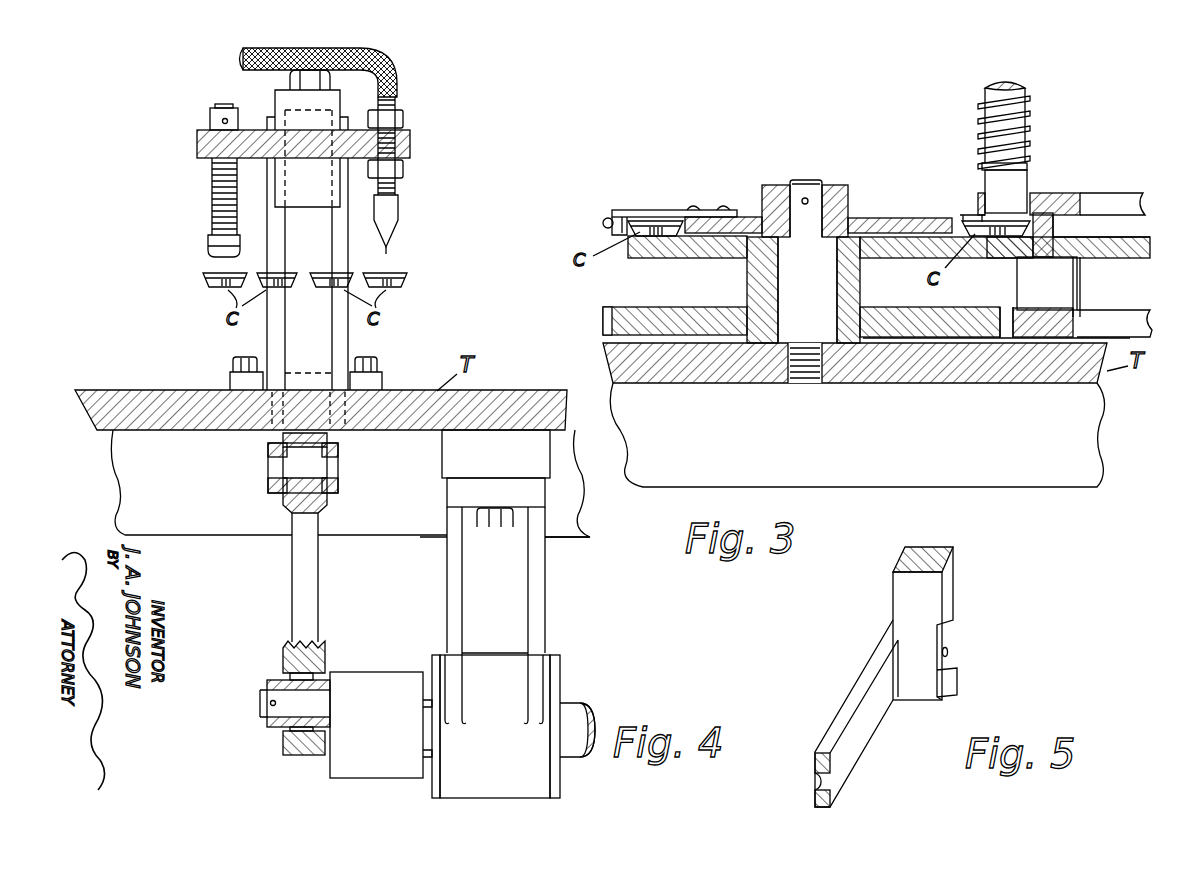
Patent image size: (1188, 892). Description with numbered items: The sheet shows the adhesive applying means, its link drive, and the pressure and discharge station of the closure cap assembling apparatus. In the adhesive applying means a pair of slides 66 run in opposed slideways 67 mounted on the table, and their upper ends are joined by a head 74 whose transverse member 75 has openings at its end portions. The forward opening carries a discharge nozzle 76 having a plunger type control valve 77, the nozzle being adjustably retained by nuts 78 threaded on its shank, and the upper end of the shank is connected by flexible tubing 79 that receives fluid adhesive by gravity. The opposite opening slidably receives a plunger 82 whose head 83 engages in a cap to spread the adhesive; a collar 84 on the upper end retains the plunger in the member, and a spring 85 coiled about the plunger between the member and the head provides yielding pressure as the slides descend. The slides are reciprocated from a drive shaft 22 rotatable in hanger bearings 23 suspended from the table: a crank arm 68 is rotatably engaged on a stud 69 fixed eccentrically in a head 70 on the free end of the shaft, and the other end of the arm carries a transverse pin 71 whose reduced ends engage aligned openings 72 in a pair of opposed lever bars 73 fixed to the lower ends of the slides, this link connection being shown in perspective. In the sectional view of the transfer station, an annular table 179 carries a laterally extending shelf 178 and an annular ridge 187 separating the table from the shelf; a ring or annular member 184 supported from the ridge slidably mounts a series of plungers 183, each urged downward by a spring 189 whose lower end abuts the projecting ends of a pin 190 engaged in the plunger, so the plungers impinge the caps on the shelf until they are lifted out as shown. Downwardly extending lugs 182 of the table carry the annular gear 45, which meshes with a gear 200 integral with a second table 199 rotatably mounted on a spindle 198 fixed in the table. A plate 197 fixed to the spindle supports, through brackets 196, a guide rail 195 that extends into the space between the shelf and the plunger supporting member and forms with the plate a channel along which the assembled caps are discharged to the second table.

In FIG. 4, the flexible tubing 79 is at (290, 54).
In FIG. 4, the head 74 is at (283, 100).
In FIG. 4, the collar 84 is at (210, 119).
In FIG. 4, the transverse member 75 is at (196, 140).
In FIG. 4, the spring 85 is at (211, 178).
In FIG. 4, the plunger 82 is at (211, 210).
In FIG. 4, the head 83 is at (208, 244).
In FIG. 4, the nuts 78 is at (404, 167).
In FIG. 4, the discharge nozzle 76 is at (399, 208).
In FIG. 4, the control valve 77 is at (391, 242).
In FIG. 4, the slides 66 is at (302, 323).
In FIG. 5, the slides 66 is at (928, 594).
In FIG. 4, the slideways 67 is at (340, 341).
In FIG. 4, the lever bars 73 is at (268, 449).
In FIG. 5, the lever bars 73 is at (857, 692).
In FIG. 4, the transverse pin 71 is at (312, 467).
In FIG. 4, the openings 72 is at (268, 473).
In FIG. 5, the openings 72 is at (818, 779).
In FIG. 4, the crank arm 68 is at (307, 589).
In FIG. 4, the stud 69 is at (273, 707).
In FIG. 4, the head 70 is at (368, 683).
In FIG. 4, the hanger bearings 23 is at (517, 588).
In FIG. 4, the drive shaft 22 is at (573, 708).
In FIG. 3, the spindle 198 is at (802, 285).
In FIG. 3, the plate 197 is at (874, 226).
In FIG. 3, the brackets 196 is at (651, 209).
In FIG. 3, the guide rail 195 is at (617, 223).
In FIG. 3, the second table 199 is at (657, 244).
In FIG. 3, the annular table 179 is at (1126, 250).
In FIG. 3, the shelf 178 is at (1013, 251).
In FIG. 3, the gear 200 is at (607, 314).
In FIG. 3, the lugs 182 is at (1058, 284).
In FIG. 3, the annular gear 45 is at (1115, 317).
In FIG. 3, the annular member 184 is at (1048, 193).
In FIG. 3, the annular ridge 187 is at (1042, 228).
In FIG. 3, the pin 190 is at (983, 164).
In FIG. 3, the plungers 183 is at (1030, 101).
In FIG. 3, the spring 189 is at (1030, 129).